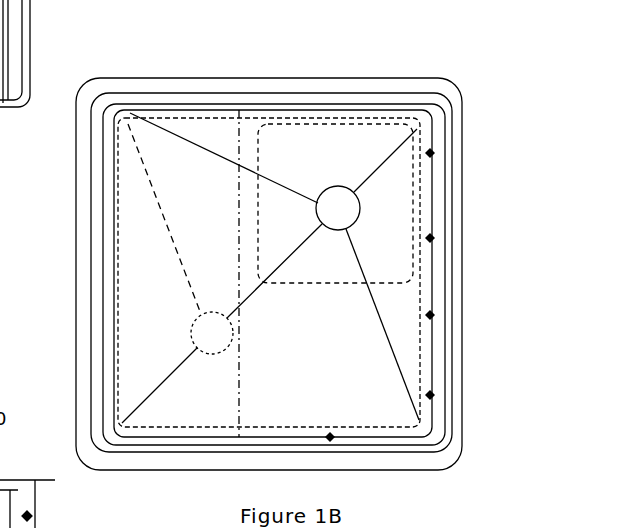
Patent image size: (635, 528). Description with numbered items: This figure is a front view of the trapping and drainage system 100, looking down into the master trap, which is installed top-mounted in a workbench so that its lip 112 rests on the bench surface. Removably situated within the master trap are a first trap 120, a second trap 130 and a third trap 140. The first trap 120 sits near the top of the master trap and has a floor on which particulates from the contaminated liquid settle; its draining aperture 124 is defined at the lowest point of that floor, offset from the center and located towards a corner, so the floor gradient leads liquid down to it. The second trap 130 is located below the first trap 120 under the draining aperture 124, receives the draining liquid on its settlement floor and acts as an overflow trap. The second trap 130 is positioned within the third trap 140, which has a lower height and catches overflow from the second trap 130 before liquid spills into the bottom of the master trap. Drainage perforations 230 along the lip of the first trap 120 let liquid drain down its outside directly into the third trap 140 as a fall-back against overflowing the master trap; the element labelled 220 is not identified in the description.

The trapping and drainage system 100 is at (318, 50).
The lip 112 is at (80, 237).
The first trap 120 is at (111, 300).
The draining aperture 124 is at (338, 189).
The second trap 130 is at (256, 238).
The third trap 140 is at (236, 192).
The seal 220 is at (100, 170).
The drainage perforations 230 is at (436, 237).